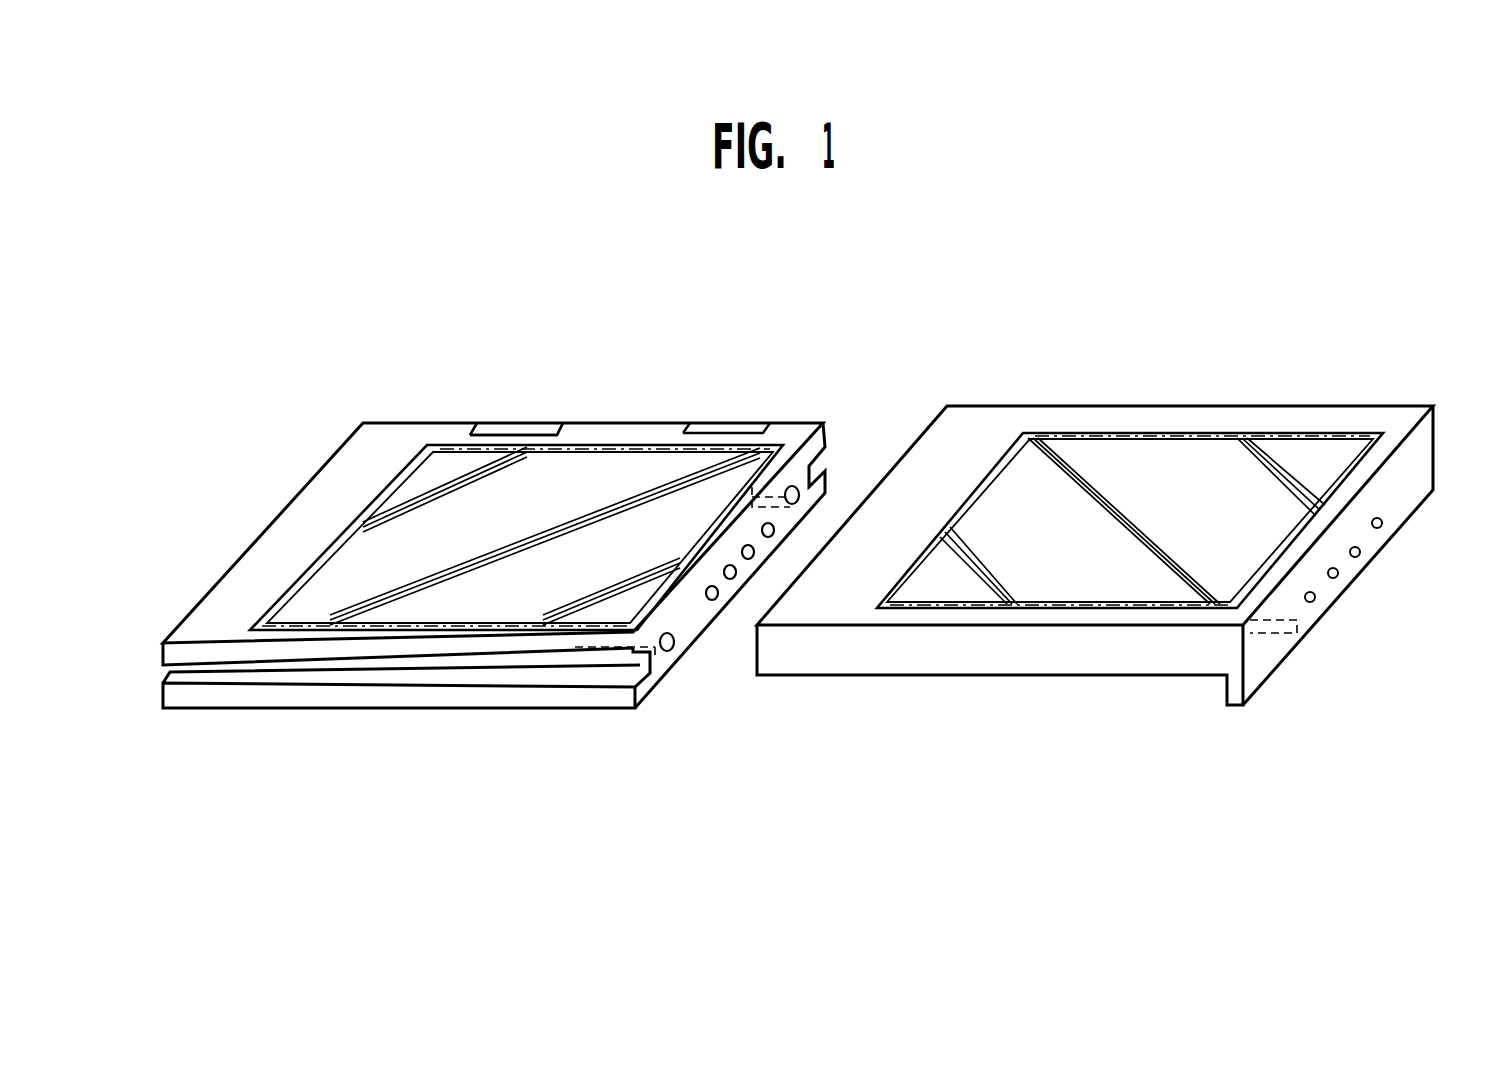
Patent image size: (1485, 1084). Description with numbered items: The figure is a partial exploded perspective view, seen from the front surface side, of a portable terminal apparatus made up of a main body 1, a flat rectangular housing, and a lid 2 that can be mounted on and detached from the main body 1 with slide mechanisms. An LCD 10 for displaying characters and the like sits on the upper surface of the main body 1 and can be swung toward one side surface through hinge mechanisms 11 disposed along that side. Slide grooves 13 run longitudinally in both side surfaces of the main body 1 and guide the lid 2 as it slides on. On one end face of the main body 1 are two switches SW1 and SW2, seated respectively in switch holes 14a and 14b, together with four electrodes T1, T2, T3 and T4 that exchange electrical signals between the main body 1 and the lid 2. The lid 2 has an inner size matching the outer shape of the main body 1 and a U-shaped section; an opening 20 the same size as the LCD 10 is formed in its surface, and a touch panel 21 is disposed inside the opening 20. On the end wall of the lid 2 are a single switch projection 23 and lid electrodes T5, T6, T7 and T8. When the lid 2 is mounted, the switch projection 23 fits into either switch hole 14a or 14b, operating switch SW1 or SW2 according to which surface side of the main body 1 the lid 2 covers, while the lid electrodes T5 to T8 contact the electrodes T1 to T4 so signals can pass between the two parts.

The main body 1 is at (387, 437).
The lid 2 is at (1140, 420).
The LCD 10 is at (623, 497).
The hinge mechanisms 11 is at (521, 425).
The slide grooves 13 is at (360, 677).
The switch hole 14a is at (670, 651).
The switch hole 14b is at (800, 493).
The switch SW1 is at (622, 637).
The switch SW2 is at (752, 487).
The electrode T1 is at (718, 598).
The electrode T2 is at (736, 576).
The electrode T3 is at (754, 555).
The electrode T4 is at (774, 534).
The lid electrode T5 is at (1314, 602).
The lid electrode T6 is at (1337, 578).
The lid electrode T7 is at (1359, 557).
The lid electrode T8 is at (1381, 528).
The opening 20 is at (1072, 440).
The touch panel 21 is at (1253, 470).
The switch projection 23 is at (1257, 633).